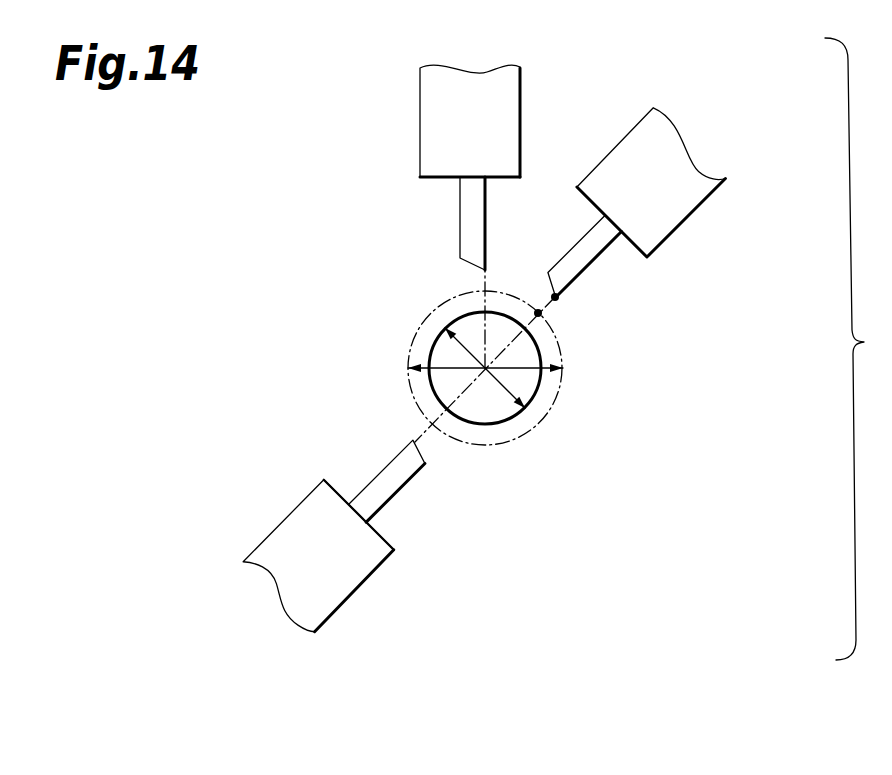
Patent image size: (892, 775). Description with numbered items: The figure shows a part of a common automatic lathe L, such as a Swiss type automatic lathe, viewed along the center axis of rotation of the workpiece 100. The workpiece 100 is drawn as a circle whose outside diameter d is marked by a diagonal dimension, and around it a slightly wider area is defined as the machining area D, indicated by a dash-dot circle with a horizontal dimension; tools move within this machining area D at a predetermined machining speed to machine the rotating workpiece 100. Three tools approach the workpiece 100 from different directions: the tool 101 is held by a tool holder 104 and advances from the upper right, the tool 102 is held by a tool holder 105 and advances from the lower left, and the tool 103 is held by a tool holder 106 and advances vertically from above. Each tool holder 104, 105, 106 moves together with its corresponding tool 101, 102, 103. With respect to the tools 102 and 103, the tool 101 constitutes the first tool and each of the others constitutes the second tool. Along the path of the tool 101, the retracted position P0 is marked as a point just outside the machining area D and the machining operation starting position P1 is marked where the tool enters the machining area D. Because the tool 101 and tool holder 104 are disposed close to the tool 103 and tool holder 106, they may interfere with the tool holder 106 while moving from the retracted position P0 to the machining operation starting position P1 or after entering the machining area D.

The workpiece 100 is at (541, 386).
The tool 101 is at (580, 260).
The tool 102 is at (388, 492).
The tool 103 is at (468, 215).
The tool holder 104 is at (668, 202).
The tool holder 105 is at (355, 593).
The tool holder 106 is at (418, 128).
The retracted position P0 is at (558, 300).
The machining operation starting position P1 is at (541, 316).
The machining area D is at (447, 363).
The outside diameter d is at (505, 388).
The automatic lathe L is at (856, 349).